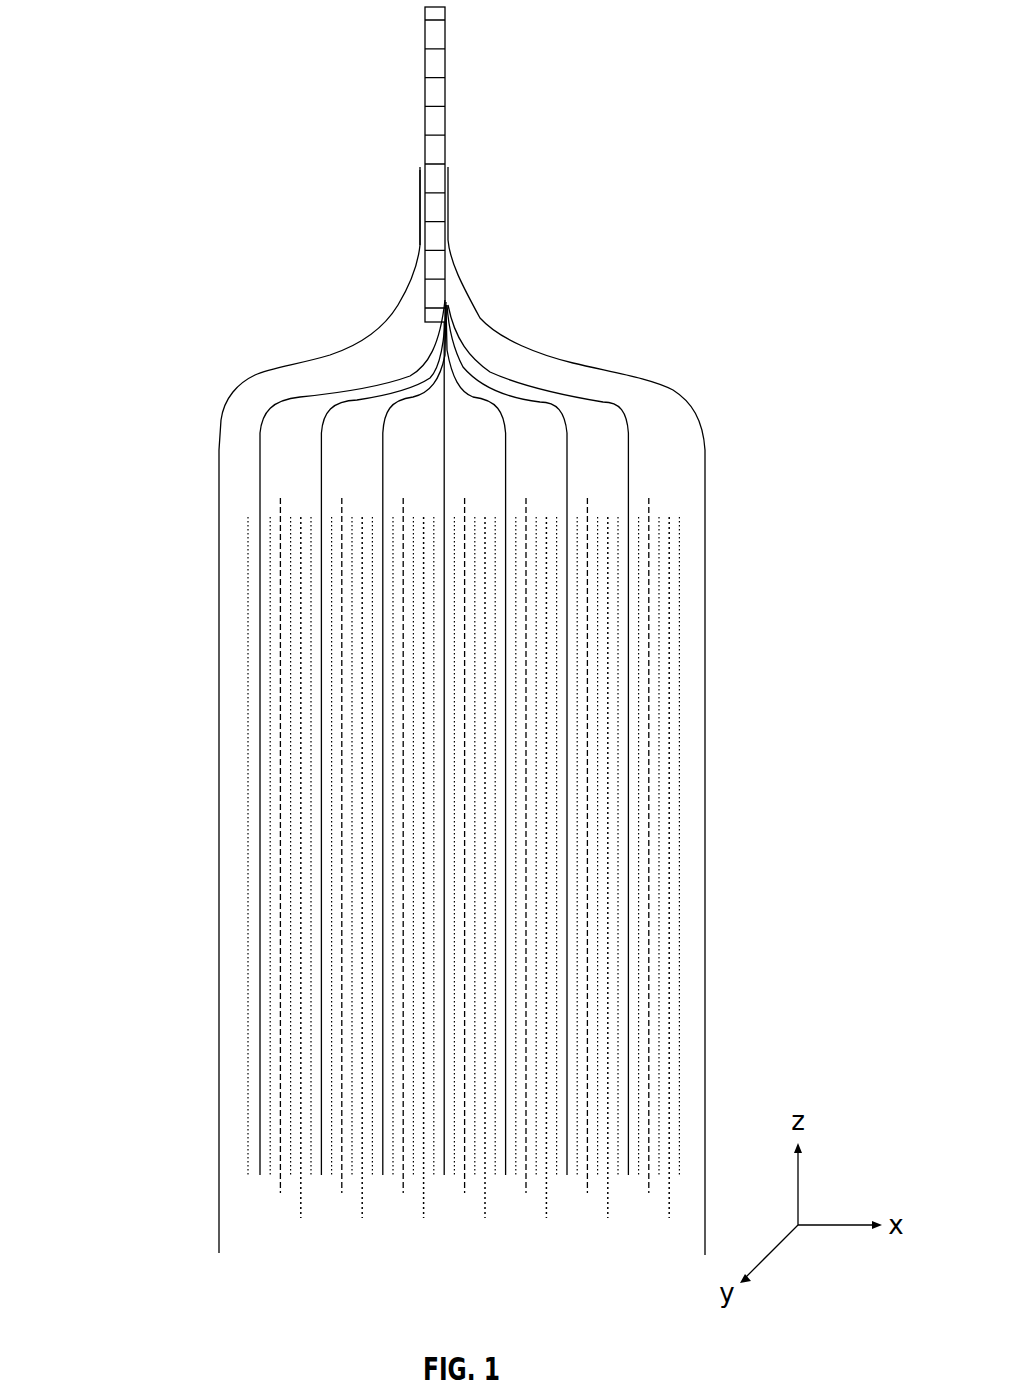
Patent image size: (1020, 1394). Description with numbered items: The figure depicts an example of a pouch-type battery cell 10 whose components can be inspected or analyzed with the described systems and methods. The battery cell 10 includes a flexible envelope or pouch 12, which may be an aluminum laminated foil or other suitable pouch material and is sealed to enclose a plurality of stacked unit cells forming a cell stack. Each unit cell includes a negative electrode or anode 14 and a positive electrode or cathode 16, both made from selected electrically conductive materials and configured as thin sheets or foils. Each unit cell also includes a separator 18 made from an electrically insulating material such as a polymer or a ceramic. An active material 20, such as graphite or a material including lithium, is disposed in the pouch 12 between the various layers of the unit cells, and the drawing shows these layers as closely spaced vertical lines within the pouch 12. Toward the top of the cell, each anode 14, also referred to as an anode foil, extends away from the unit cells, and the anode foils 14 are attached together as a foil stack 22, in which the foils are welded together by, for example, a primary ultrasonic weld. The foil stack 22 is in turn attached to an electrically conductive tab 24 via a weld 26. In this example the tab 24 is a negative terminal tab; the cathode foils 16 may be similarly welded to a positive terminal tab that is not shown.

The pouch-type battery cell 10 is at (112, 45).
The pouch 12 is at (705, 871).
The anode 14 is at (258, 483).
The cathode 16 is at (300, 693).
The separator 18 is at (280, 633).
The active material 20 is at (370, 633).
The foil stack 22 is at (483, 368).
The tab 24 is at (447, 93).
The weld 26 is at (435, 267).